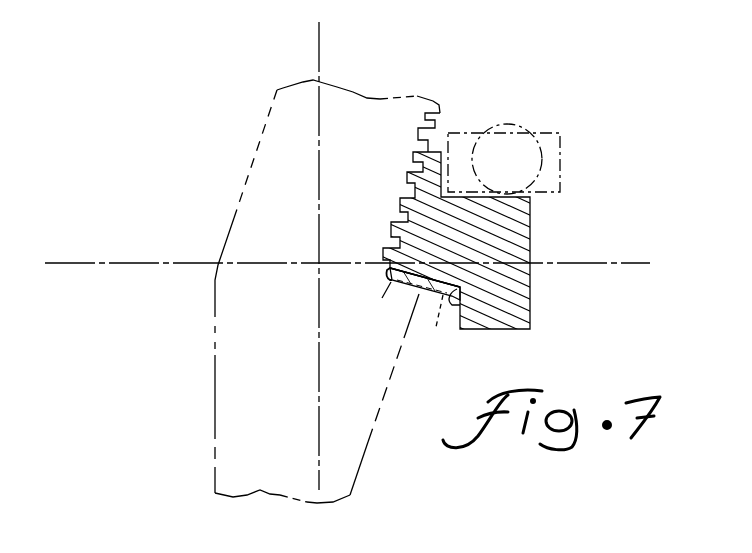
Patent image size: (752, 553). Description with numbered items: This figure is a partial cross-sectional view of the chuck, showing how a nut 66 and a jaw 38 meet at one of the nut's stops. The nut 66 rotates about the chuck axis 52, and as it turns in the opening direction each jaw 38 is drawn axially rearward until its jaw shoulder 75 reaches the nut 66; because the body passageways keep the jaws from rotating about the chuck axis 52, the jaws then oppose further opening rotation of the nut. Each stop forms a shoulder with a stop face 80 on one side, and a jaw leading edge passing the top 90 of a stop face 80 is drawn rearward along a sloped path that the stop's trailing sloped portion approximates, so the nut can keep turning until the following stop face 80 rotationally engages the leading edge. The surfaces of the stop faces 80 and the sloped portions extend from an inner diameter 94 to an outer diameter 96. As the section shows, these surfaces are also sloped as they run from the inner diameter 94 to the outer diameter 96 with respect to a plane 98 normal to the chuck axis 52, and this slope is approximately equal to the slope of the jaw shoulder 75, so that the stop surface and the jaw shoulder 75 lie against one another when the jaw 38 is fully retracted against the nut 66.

The jaw 38 is at (215, 403).
The chuck axis 52 is at (319, 33).
The nut 66 is at (530, 313).
The jaw shoulder 75 is at (382, 298).
The stop face 80 is at (436, 327).
The top of stop face 90 is at (404, 344).
The inner diameter 94 is at (388, 270).
The outer diameter 96 is at (462, 287).
The plane normal to the chuck axis 98 is at (176, 263).